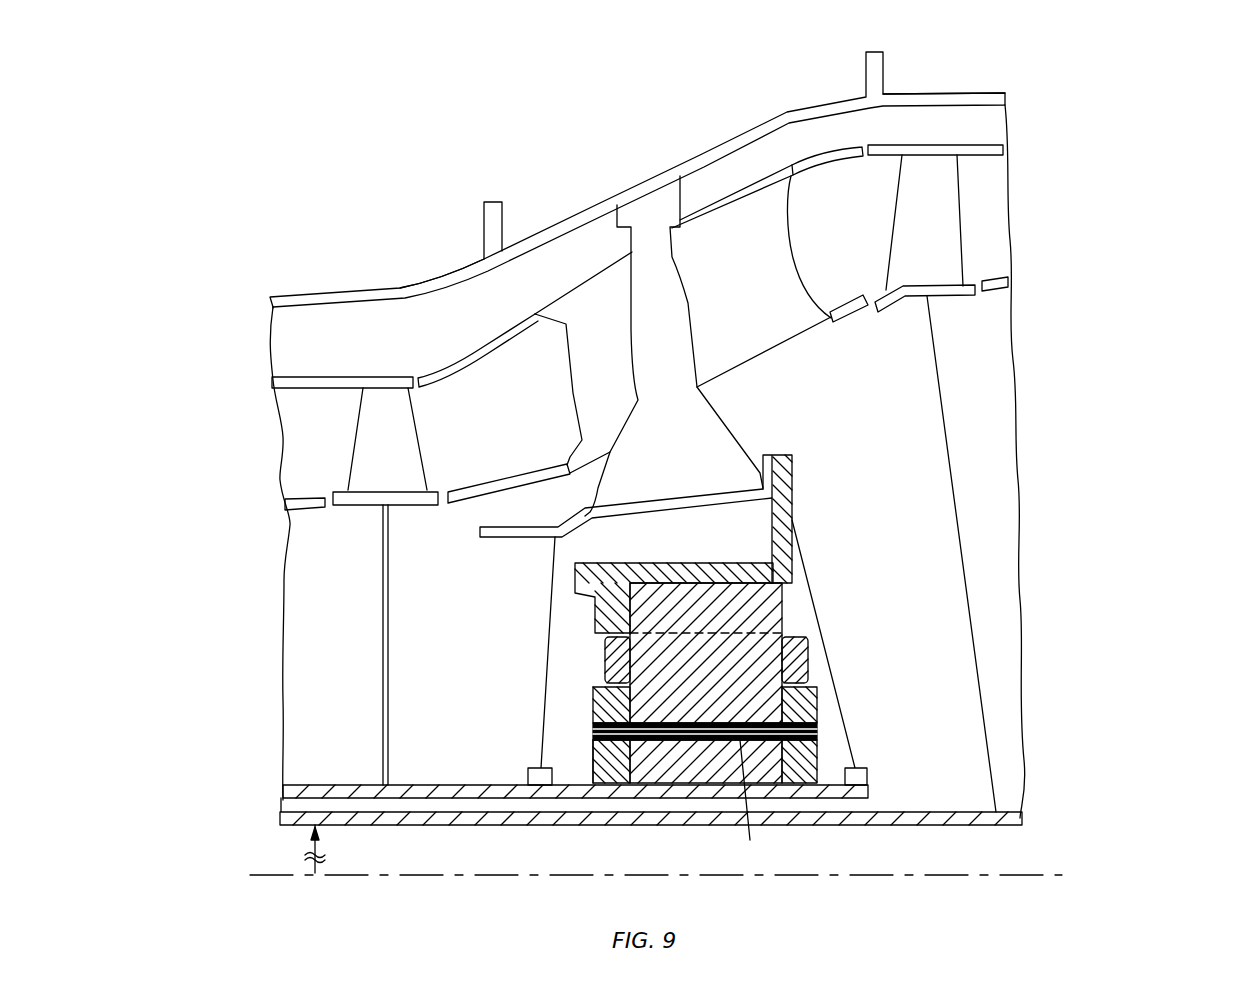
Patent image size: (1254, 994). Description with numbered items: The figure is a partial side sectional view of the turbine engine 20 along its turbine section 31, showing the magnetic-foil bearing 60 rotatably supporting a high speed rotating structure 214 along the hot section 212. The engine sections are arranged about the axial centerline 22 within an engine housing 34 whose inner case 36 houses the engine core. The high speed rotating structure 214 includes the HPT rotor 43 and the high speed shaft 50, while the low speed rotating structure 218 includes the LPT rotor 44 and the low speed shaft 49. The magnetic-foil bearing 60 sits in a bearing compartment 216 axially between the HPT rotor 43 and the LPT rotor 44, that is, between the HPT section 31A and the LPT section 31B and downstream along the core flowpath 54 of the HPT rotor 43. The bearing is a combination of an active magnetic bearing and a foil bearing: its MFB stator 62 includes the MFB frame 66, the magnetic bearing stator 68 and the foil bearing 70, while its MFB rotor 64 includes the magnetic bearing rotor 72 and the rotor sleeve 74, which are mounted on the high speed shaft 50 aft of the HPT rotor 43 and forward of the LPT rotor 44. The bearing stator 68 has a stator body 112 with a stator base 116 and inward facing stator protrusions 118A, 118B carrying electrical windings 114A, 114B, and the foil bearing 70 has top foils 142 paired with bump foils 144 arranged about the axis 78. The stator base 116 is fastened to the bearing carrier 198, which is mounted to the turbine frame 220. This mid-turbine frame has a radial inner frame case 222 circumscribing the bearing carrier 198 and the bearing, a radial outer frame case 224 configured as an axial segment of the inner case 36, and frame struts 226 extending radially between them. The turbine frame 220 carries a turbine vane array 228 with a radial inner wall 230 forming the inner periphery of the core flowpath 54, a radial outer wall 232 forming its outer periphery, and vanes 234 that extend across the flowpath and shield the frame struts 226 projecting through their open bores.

The turbine engine 20 is at (1160, 82).
The axial centerline 22 is at (620, 871).
The turbine section 31 is at (637, 174).
The high pressure turbine section 31A is at (307, 260).
The low pressure turbine section 31B is at (953, 83).
The engine housing 34 is at (409, 245).
The inner case 36 is at (432, 263).
The HPT rotor 43 is at (383, 652).
The LPT rotor 44 is at (978, 640).
The low speed shaft 49 is at (1002, 825).
The high speed shaft 50 is at (512, 761).
The core flowpath 54 is at (317, 443).
The magnetic-foil bearing 60 is at (800, 587).
The magnetic-foil bearing stator 62 is at (582, 660).
The magnetic-foil bearing rotor 64 is at (570, 762).
The magnetic-foil bearing frame 66 is at (815, 688).
The magnetic bearing stator 68 is at (793, 623).
The foil bearing 70 is at (823, 725).
The magnetic bearing rotor 72 is at (712, 773).
The rotor sleeve 74 is at (820, 741).
The axis 78 is at (277, 875).
The stator body 112 is at (687, 573).
The first electrical winding 114A is at (869, 662).
The second electrical winding 114B is at (807, 647).
The stator body base 116 is at (706, 653).
The first stator body protrusion 118A is at (706, 653).
The second stator body protrusion 118B is at (767, 696).
The top foil 142 is at (750, 840).
The bump foil 144 is at (598, 700).
The bearing carrier 198 is at (773, 532).
The hot section 212 is at (637, 174).
The high speed rotating structure 214 is at (313, 785).
The bearing compartment 216 is at (588, 538).
The low speed rotating structure 218 is at (713, 827).
The turbine frame 220 is at (712, 143).
The radial inner frame case 222 is at (570, 518).
The radial outer frame case 224 is at (562, 217).
The frame strut 226 is at (693, 315).
The turbine vane array 228 is at (795, 155).
The radial inner wall 230 is at (517, 473).
The radial outer wall 232 is at (490, 357).
The vane 234 is at (573, 390).